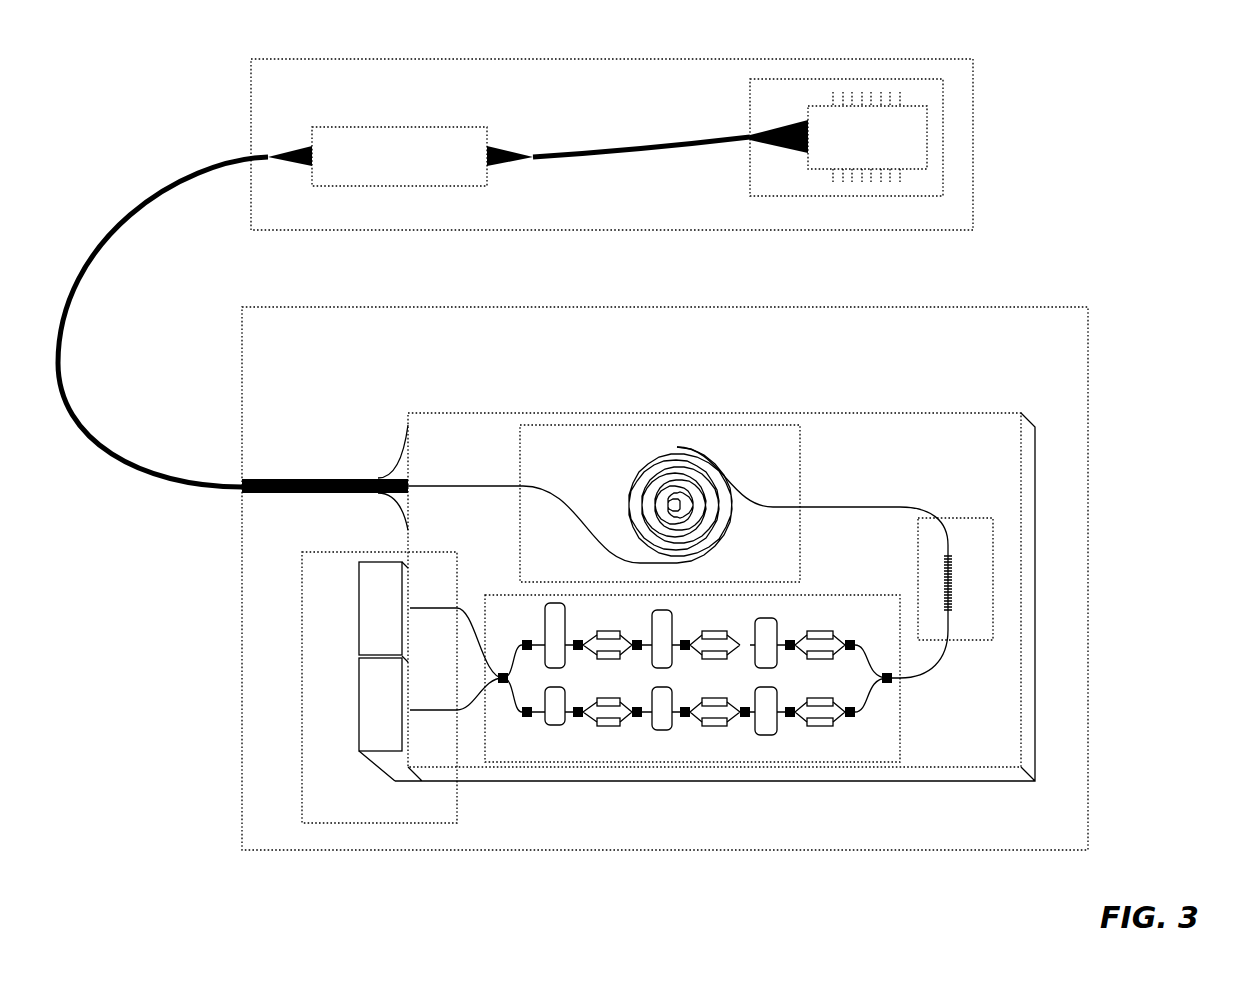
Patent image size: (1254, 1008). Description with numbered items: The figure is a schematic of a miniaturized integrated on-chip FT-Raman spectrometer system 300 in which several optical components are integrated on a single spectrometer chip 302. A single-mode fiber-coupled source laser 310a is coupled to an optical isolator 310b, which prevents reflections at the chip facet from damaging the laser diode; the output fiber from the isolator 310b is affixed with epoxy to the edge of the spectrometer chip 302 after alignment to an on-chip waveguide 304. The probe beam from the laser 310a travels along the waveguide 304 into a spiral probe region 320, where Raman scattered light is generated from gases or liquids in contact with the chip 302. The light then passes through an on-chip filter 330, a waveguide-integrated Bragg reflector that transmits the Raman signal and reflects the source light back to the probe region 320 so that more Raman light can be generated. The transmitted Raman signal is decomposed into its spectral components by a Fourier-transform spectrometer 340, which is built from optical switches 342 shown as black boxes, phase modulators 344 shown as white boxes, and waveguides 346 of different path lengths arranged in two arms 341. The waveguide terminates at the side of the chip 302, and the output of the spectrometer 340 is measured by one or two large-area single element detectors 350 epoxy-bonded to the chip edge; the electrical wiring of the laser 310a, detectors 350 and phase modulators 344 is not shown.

The integrated on-chip FT-Raman spectrometer system 300 is at (1077, 140).
The spectrometer chip 302 is at (893, 455).
The on-chip waveguide 304 is at (450, 477).
The source laser 310a is at (899, 159).
The optical isolator 310b is at (430, 172).
The spiral probe region 320 is at (660, 503).
The on-chip filter 330 is at (960, 577).
The Fourier-transform spectrometer 340 is at (893, 754).
The arms 341 is at (878, 708).
The optical switches 342 is at (745, 716).
The phase modulators 344 is at (818, 733).
The waveguides of different path lengths 346 is at (766, 735).
The large-area single element detectors 350 is at (408, 695).